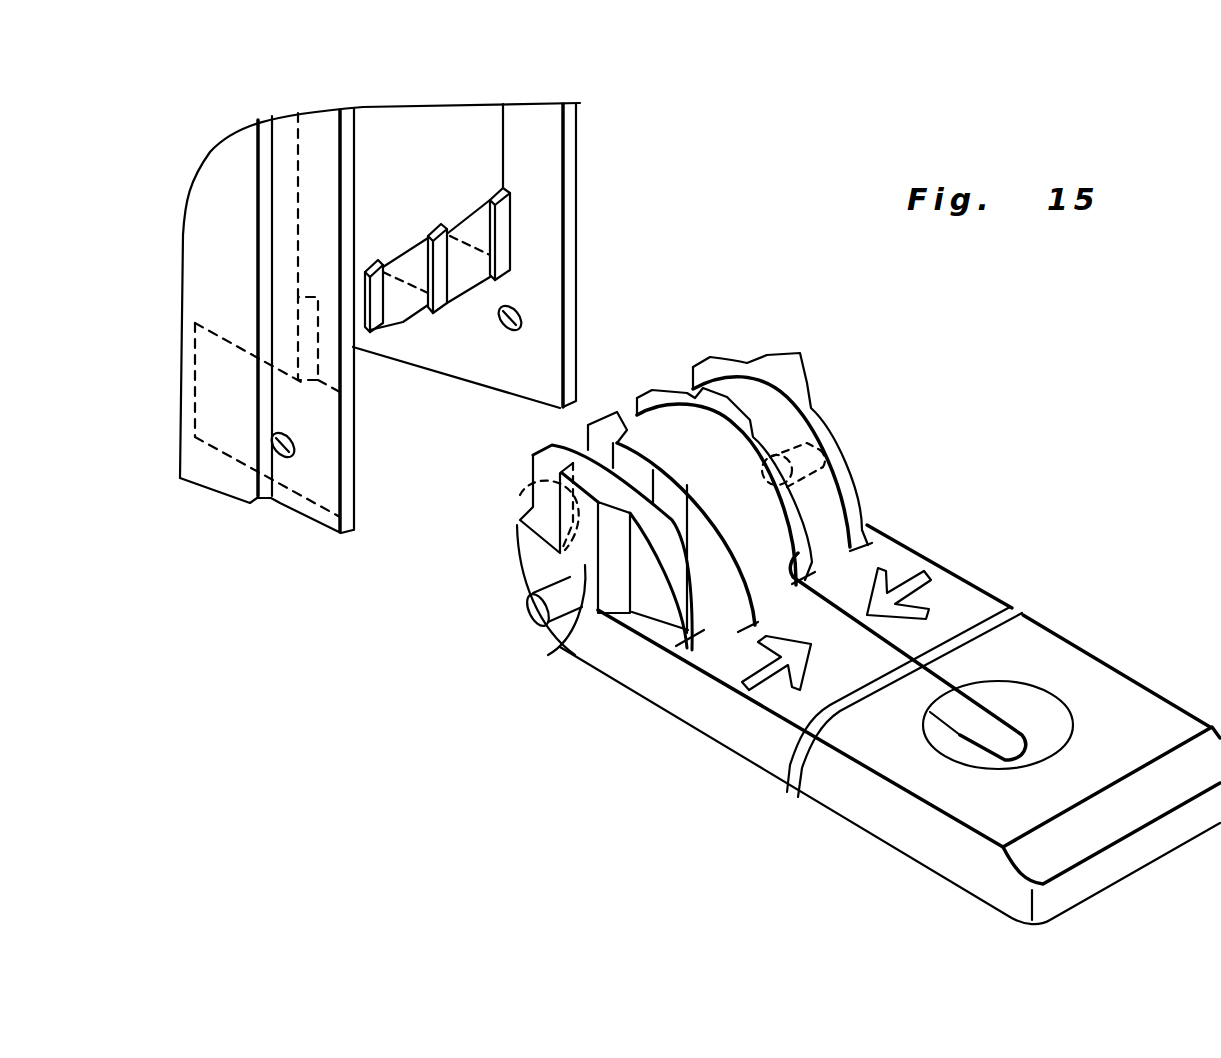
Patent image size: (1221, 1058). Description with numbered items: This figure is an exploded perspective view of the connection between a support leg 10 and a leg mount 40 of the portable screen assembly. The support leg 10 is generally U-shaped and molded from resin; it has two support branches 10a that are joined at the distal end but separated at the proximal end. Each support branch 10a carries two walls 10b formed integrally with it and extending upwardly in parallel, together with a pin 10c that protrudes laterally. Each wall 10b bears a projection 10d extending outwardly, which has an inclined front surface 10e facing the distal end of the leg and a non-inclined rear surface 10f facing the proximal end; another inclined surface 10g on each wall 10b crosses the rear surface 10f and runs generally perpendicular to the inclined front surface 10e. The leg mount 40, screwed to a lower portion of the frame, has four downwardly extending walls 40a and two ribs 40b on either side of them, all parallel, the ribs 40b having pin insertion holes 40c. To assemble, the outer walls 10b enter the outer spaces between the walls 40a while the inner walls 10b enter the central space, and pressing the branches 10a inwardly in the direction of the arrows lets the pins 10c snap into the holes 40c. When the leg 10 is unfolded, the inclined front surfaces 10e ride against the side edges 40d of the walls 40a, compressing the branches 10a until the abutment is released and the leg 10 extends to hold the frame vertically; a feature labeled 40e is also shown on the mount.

The support leg 10 is at (1196, 617).
The support branch 10a is at (760, 693).
The wall 10b is at (730, 597).
The pin 10c is at (537, 617).
The projection 10d is at (583, 563).
The inclined front surface 10e is at (617, 583).
The non-inclined rear surface 10f is at (533, 490).
The inclined surface 10g is at (550, 537).
The leg mount 40 is at (460, 153).
The downwardly extending wall 40a is at (493, 283).
The rib 40b is at (567, 311).
The pin insertion hole 40c is at (510, 325).
The side edge 40d is at (300, 302).
The recess edge 40e is at (357, 342).